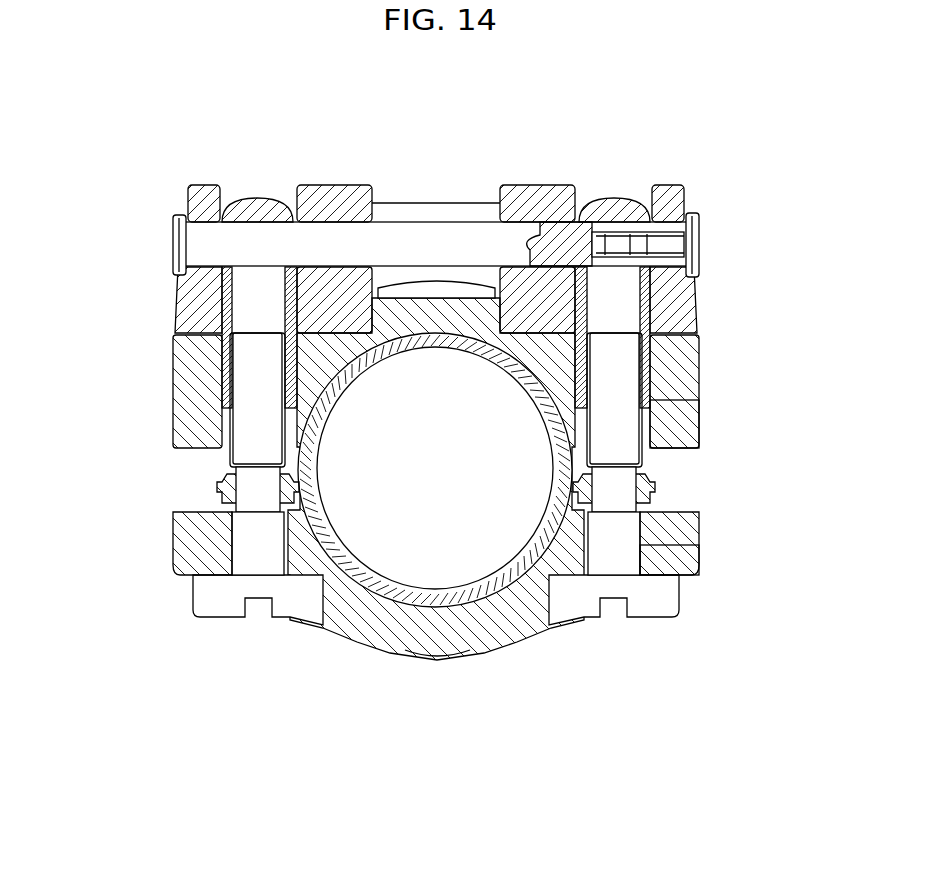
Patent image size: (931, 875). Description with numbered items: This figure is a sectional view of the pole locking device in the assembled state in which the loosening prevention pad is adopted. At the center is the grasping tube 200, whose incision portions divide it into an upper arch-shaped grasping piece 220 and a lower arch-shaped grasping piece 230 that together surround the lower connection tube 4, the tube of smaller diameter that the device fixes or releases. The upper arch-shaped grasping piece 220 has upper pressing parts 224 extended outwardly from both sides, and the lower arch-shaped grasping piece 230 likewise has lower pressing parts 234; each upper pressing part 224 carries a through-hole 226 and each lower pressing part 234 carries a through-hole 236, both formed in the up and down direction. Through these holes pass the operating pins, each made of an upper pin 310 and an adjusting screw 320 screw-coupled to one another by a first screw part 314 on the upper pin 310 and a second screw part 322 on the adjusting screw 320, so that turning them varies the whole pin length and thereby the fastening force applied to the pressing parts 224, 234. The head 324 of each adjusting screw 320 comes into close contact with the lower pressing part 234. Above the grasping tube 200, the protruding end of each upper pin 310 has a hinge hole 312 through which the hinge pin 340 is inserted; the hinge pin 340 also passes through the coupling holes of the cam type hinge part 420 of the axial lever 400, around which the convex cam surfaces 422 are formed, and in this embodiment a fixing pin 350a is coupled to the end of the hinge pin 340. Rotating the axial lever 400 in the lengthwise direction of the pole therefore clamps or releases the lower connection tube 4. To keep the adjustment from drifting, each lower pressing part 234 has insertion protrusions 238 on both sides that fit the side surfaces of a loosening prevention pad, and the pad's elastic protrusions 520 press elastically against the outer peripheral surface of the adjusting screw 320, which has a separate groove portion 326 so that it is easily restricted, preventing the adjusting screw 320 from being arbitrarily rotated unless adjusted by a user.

The lower connection tube 4 is at (495, 650).
The grasping tube 200 is at (372, 650).
The upper arch-shaped grasping piece 220 is at (433, 340).
The upper pressing part 224 is at (176, 432).
The through-hole 226 is at (665, 428).
The lower arch-shaped grasping piece 230 is at (413, 658).
The lower pressing part 234 is at (176, 548).
The through-hole 236 is at (670, 568).
The insertion protrusion 238 is at (216, 492).
The upper pin 310 is at (662, 398).
The hinge hole 312 is at (532, 185).
The first screw part 314 is at (680, 302).
The adjusting screw 320 is at (645, 458).
The second screw part 322 is at (652, 360).
The head 324 is at (643, 625).
The groove portion 326 is at (680, 520).
The hinge pin 340 is at (176, 240).
The fixing pin 350a is at (700, 240).
The axial lever 400 is at (345, 185).
The cam type hinge part 420 is at (177, 290).
The cam surface 422 is at (318, 348).
The elastic protrusion 520 is at (652, 482).